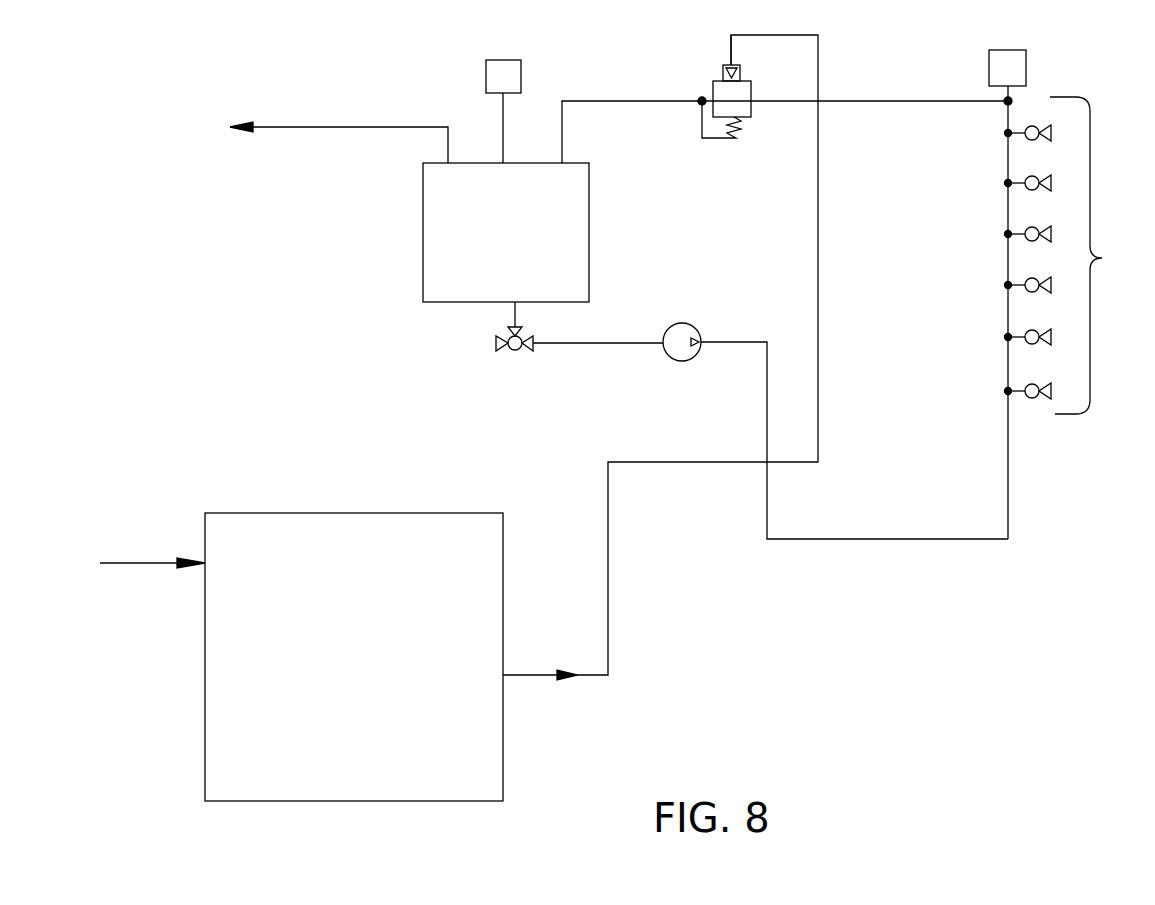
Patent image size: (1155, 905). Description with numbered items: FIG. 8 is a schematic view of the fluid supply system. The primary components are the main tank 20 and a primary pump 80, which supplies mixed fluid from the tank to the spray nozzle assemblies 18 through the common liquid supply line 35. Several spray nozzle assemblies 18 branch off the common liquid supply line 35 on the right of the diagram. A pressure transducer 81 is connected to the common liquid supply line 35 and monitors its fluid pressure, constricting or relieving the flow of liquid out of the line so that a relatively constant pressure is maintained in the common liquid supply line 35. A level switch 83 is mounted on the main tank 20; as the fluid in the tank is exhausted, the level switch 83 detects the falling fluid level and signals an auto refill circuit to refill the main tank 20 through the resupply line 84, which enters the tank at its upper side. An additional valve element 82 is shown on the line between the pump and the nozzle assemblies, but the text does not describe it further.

The resupply line 84 is at (320, 127).
The level switch 83 is at (493, 78).
The pressure regulating valve 82 is at (722, 92).
The pressure transducer 81 is at (1000, 67).
The spray nozzle assemblies 18 is at (1102, 258).
The main tank 20 is at (439, 225).
The primary pump 80 is at (677, 348).
The common liquid supply line 35 is at (818, 539).